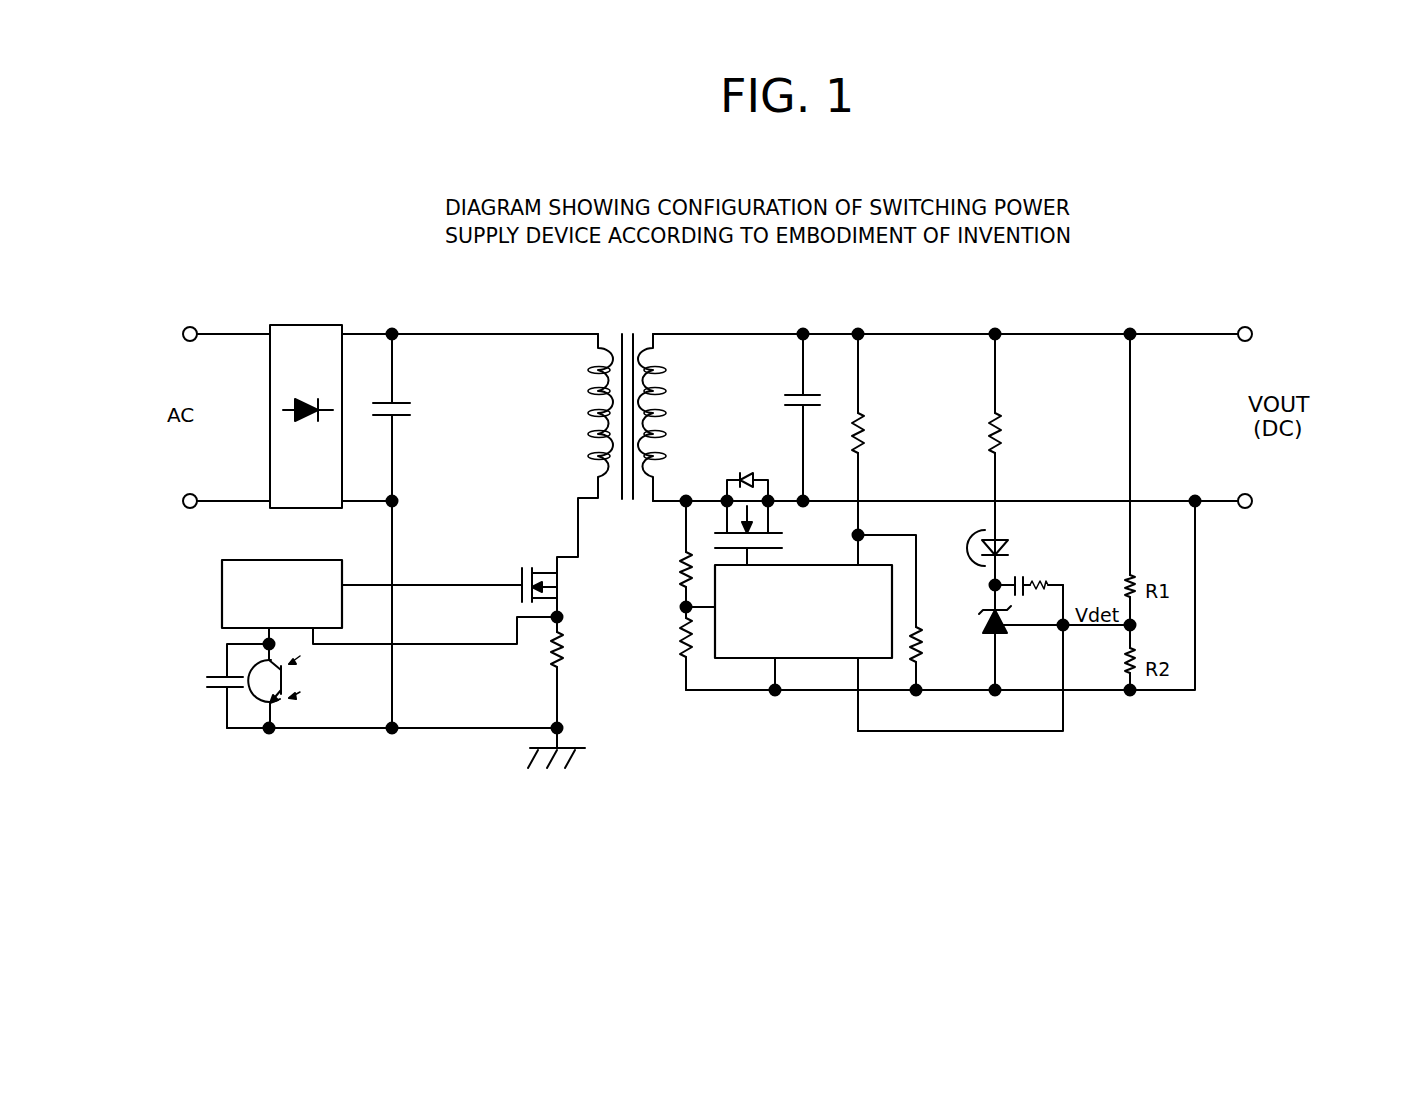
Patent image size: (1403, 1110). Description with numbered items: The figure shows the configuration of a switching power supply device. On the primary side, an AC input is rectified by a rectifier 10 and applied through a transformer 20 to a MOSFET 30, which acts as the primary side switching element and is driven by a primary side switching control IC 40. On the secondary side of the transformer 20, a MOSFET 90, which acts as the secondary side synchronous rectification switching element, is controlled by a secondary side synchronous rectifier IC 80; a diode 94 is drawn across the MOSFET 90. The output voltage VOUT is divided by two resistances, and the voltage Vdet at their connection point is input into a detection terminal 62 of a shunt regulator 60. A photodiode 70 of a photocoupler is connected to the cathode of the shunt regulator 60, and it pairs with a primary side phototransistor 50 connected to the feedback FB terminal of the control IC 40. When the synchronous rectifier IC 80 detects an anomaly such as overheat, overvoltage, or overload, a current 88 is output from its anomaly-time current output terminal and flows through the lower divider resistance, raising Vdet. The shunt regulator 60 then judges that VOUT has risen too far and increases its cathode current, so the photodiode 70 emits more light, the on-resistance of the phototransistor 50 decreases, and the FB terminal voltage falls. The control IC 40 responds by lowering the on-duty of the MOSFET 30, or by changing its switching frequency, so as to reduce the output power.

The rectifier circuit 10 is at (301, 324).
The transformer 20 is at (629, 332).
The MOSFET 30 is at (550, 577).
The primary side switching control IC 40 is at (220, 582).
The phototransistor 50 is at (297, 680).
The shunt regulator 60 is at (978, 615).
The detection terminal 62 is at (1033, 625).
The photodiode 70 is at (1010, 547).
The secondary side synchronous rectifier IC 80 is at (755, 658).
The current 88 is at (932, 733).
The MOSFET 90 is at (773, 542).
The body diode 94 is at (753, 473).